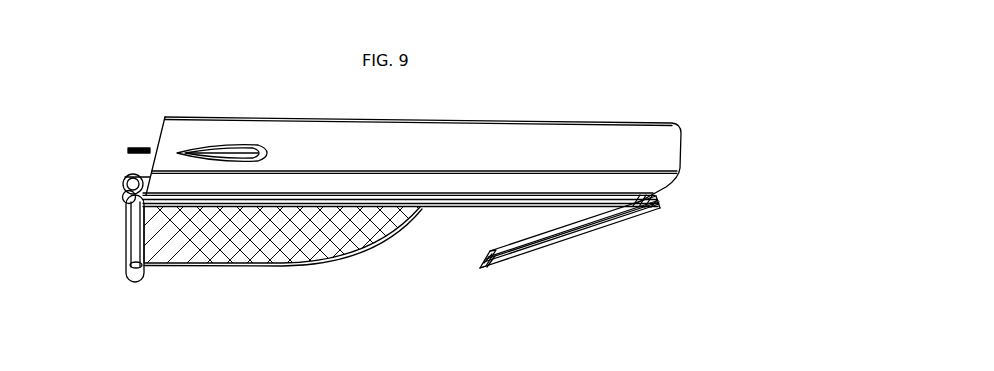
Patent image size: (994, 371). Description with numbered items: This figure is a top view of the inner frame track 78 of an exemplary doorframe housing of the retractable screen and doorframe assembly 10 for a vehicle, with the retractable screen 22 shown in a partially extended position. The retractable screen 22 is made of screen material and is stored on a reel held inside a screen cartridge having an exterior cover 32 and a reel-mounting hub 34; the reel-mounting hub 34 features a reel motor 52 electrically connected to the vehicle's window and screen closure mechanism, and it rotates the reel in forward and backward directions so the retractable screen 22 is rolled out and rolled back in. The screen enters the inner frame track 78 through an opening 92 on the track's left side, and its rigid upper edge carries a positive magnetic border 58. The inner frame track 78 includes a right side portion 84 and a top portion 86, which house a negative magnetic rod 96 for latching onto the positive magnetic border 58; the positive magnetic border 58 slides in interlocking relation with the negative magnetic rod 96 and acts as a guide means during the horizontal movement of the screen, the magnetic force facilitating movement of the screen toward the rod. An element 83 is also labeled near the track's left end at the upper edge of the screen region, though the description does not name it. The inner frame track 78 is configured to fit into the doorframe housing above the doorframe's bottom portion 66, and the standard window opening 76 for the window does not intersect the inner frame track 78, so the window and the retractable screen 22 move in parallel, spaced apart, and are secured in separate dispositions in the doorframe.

The retractable screen and doorframe assembly 10 is at (541, 94).
The retractable screen 22 is at (187, 268).
The exterior cover 32 is at (123, 250).
The reel-mounting hub 34 is at (123, 180).
The reel motor 52 is at (122, 193).
The positive magnetic border 58 is at (345, 251).
The bottom portion 66 is at (530, 258).
The window opening 76 is at (315, 192).
The inner frame track 78 is at (416, 206).
The band edge 83 is at (167, 195).
The right side portion 84 is at (651, 216).
The top portion 86 is at (557, 253).
The opening 92 is at (138, 172).
The negative magnetic rod 96 is at (488, 259).